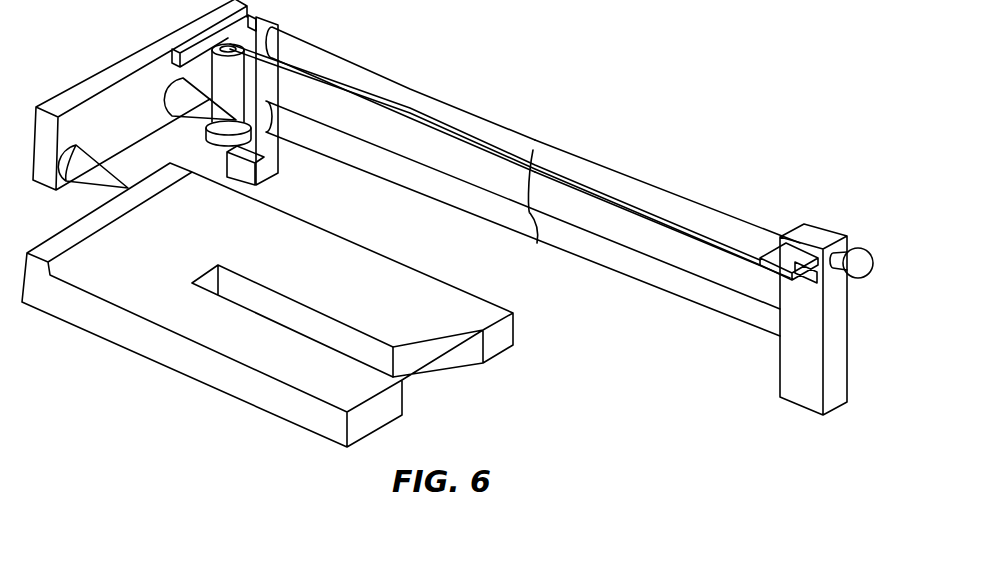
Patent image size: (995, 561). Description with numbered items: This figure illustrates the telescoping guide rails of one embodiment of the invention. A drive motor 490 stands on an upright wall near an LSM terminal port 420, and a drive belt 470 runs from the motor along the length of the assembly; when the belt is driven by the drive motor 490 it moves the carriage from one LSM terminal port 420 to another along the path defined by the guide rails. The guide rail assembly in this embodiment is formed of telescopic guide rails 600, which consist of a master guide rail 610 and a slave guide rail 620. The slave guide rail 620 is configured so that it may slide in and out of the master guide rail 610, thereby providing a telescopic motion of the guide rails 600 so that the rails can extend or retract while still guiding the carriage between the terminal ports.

The LSM terminal port 420 is at (135, 335).
The drive belt 470 is at (463, 130).
The drive motor 490 is at (240, 78).
The telescopic guide rails 600 is at (528, 157).
The master guide rail 610 is at (328, 62).
The slave guide rail 620 is at (662, 198).